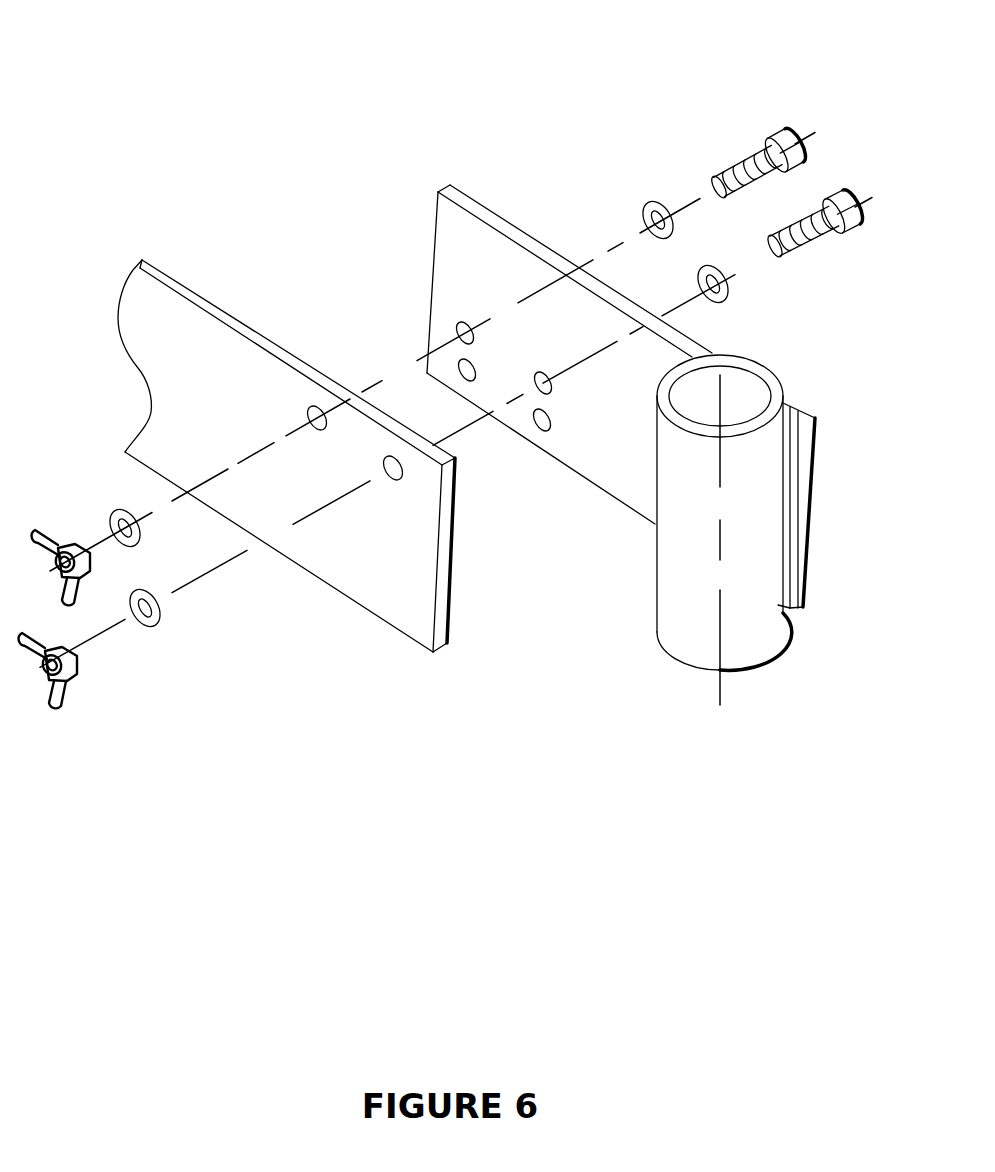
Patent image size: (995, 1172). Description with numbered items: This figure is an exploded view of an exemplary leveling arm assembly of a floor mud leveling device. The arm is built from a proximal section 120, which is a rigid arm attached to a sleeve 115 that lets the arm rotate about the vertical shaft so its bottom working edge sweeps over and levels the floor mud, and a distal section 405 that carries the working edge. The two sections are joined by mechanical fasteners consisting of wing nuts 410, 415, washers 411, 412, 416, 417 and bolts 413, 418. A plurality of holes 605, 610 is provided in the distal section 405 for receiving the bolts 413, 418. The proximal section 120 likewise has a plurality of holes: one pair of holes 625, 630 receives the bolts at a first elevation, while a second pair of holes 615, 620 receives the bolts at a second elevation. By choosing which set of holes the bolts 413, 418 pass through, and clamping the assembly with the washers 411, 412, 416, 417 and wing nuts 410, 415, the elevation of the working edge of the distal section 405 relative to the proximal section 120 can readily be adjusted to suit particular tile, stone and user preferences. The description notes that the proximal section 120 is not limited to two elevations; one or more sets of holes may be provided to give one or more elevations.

The distal section 405 is at (147, 307).
The hole 605 is at (312, 407).
The hole 610 is at (391, 456).
The hole at second elevation 615 is at (408, 188).
The hole at first elevation 625 is at (440, 206).
The hole at second elevation 620 is at (508, 213).
The hole at first elevation 630 is at (542, 409).
The proximal section 120 is at (602, 323).
The washer 412 is at (655, 202).
The bolt 413 is at (725, 168).
The washer 417 is at (725, 266).
The bolt 418 is at (800, 213).
The wing nut 410 is at (55, 708).
The wing nut 415 is at (85, 598).
The washer 416 is at (148, 628).
The washer 411 is at (142, 540).
The sleeve 115 is at (743, 633).